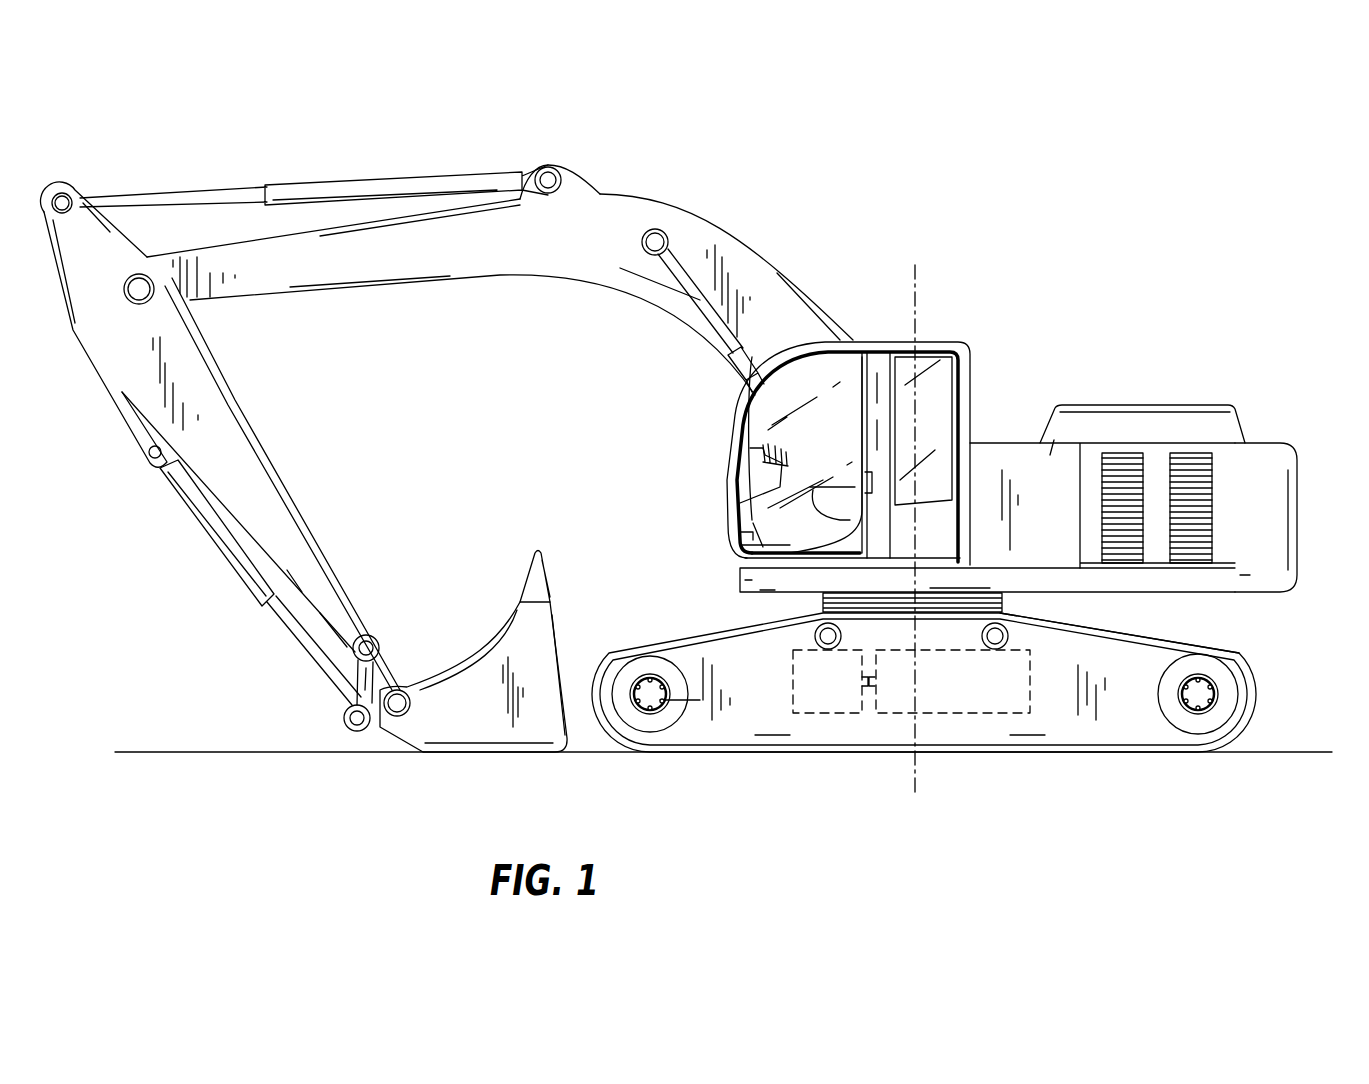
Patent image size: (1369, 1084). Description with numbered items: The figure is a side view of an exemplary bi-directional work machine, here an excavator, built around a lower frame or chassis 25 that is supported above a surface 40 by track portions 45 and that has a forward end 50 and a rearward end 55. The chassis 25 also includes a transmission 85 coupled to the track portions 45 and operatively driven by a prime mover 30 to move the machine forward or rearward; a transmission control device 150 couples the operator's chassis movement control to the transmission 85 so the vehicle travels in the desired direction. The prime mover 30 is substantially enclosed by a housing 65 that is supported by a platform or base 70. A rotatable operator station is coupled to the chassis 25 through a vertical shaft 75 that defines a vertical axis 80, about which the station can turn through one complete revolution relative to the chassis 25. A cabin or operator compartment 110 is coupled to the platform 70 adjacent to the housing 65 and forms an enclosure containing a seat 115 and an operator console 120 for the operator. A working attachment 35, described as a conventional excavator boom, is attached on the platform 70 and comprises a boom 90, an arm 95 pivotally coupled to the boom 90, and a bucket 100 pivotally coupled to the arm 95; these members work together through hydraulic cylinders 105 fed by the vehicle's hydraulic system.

The chassis 25 is at (745, 716).
The prime mover 30 is at (1195, 405).
The working attachment 35 is at (215, 152).
The surface 40 is at (233, 748).
The track portions 45 is at (1252, 697).
The forward end 50 is at (680, 628).
The rearward end 55 is at (1226, 638).
The housing 65 is at (1298, 462).
The platform 70 is at (742, 572).
The vertical shaft 75 is at (1007, 606).
The vertical axis 80 is at (918, 292).
The transmission 85 is at (965, 715).
The boom 90 is at (668, 205).
The arm 95 is at (226, 398).
The bucket 100 is at (490, 626).
The hydraulic cylinders 105 is at (405, 187).
The cabin 110 is at (876, 340).
The seat 115 is at (905, 440).
The operator console 120 is at (752, 460).
The transmission control device 150 is at (820, 715).